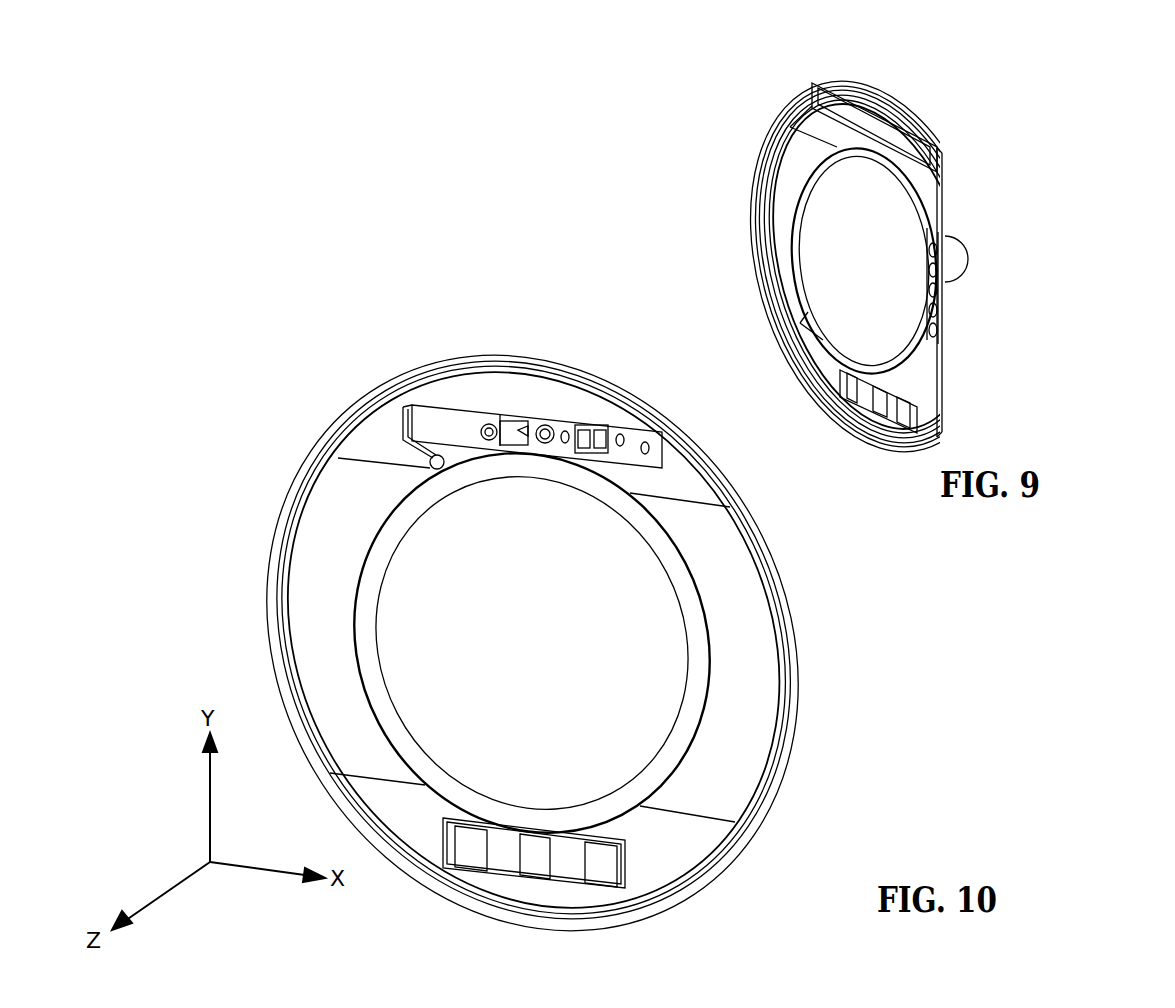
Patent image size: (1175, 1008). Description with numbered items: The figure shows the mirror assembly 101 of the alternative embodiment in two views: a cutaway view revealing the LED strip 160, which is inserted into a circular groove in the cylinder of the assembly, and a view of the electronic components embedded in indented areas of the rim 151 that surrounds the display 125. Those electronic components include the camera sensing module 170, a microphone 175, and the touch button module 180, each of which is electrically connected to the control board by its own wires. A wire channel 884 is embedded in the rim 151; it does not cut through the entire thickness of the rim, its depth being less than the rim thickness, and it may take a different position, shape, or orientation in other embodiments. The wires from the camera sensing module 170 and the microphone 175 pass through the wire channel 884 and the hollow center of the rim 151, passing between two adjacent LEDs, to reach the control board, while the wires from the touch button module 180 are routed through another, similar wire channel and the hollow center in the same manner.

In FIG. 10, the mirror assembly 101 is at (507, 629).
In FIG. 9, the mirror assembly 101 is at (931, 259).
In FIG. 10, the display 125 is at (532, 643).
In FIG. 9, the display 125 is at (864, 261).
In FIG. 10, the rim 151 is at (310, 577).
In FIG. 9, the LED strip 160 is at (935, 300).
In FIG. 10, the camera sensing module 170 is at (692, 392).
In FIG. 10, the microphone 175 is at (430, 460).
In FIG. 10, the touch button module 180 is at (625, 872).
In FIG. 10, the wire channel 884 is at (403, 410).